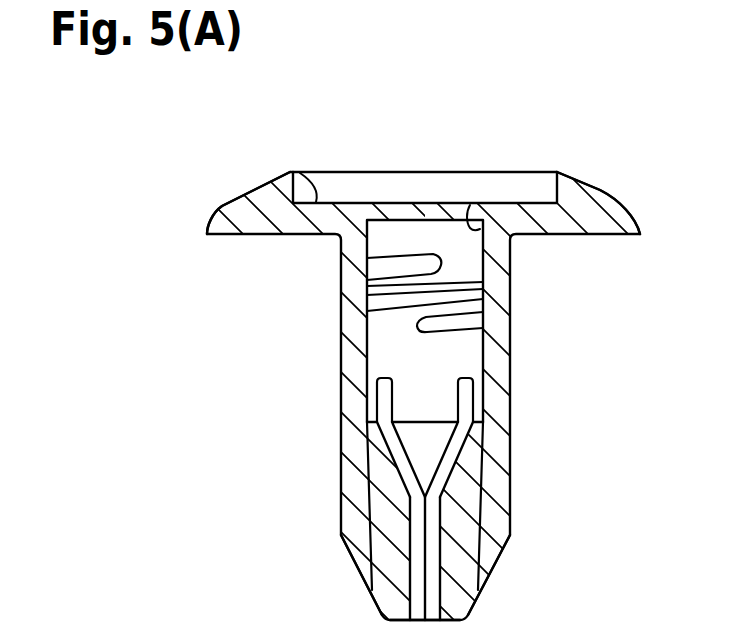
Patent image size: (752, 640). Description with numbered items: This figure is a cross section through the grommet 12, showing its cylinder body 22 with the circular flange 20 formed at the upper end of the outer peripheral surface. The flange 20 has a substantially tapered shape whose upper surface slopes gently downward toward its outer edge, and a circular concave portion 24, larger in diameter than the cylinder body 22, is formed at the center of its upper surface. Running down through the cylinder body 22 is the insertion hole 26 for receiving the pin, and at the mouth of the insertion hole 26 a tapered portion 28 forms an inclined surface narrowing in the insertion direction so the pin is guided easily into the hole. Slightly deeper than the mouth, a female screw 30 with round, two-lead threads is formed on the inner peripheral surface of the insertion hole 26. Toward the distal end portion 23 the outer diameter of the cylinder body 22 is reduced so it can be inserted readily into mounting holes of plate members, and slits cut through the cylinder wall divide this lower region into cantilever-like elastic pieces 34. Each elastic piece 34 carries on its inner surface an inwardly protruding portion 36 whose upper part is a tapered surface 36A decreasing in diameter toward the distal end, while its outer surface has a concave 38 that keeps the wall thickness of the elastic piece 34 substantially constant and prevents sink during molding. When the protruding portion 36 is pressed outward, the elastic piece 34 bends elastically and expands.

The grommet 12 is at (553, 97).
The flange 20 is at (596, 184).
The cylinder body 22 is at (513, 347).
The distal end portion 23 is at (378, 607).
The concave portion 24 is at (300, 173).
The insertion hole 26 is at (470, 205).
The tapered portion 28 is at (362, 205).
The female screw 30 is at (366, 312).
The elastic piece 34 is at (388, 557).
The protruding portion 36 is at (392, 492).
The tapered surface 36A is at (390, 459).
The concave 38 is at (370, 513).